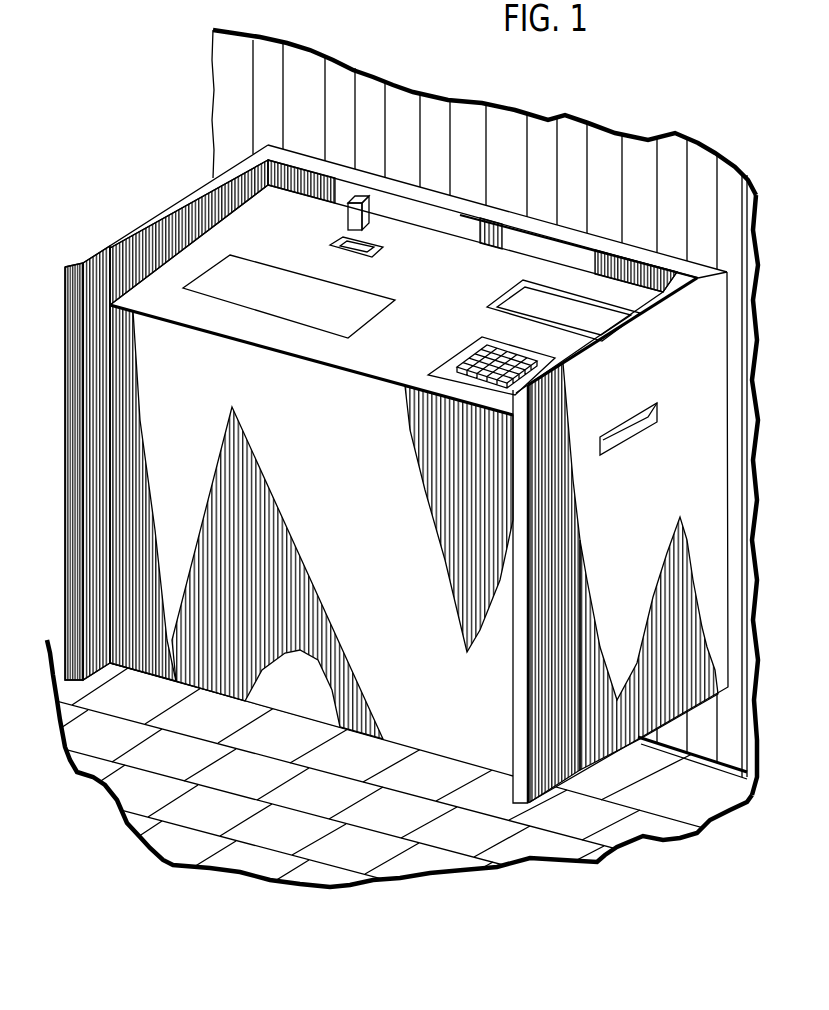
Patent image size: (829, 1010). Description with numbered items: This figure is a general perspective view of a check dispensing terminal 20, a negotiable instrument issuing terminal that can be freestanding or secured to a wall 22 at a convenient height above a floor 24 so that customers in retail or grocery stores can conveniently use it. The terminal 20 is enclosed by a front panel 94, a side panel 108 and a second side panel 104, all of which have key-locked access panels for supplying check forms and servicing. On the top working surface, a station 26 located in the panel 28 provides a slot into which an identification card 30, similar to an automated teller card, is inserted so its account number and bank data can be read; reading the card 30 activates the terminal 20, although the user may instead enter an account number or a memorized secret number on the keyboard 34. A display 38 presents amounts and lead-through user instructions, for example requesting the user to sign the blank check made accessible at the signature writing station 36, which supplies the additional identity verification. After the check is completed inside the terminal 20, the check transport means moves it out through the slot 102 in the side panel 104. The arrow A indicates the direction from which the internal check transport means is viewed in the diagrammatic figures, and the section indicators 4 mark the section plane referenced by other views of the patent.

The check dispensing terminal 20 is at (172, 182).
The wall 22 is at (218, 82).
The floor 24 is at (470, 847).
The station 26 is at (325, 239).
The panel 28 is at (350, 355).
The identification card 30 is at (368, 228).
The keyboard 34 is at (441, 356).
The station 36 is at (205, 308).
The display 38 is at (484, 294).
The front panel 94 is at (413, 578).
The slot 102 is at (617, 433).
The side panel 104 is at (600, 578).
The side panel 108 is at (115, 237).
The section line 4- 4 is at (228, 335).
The arrow A is at (202, 396).